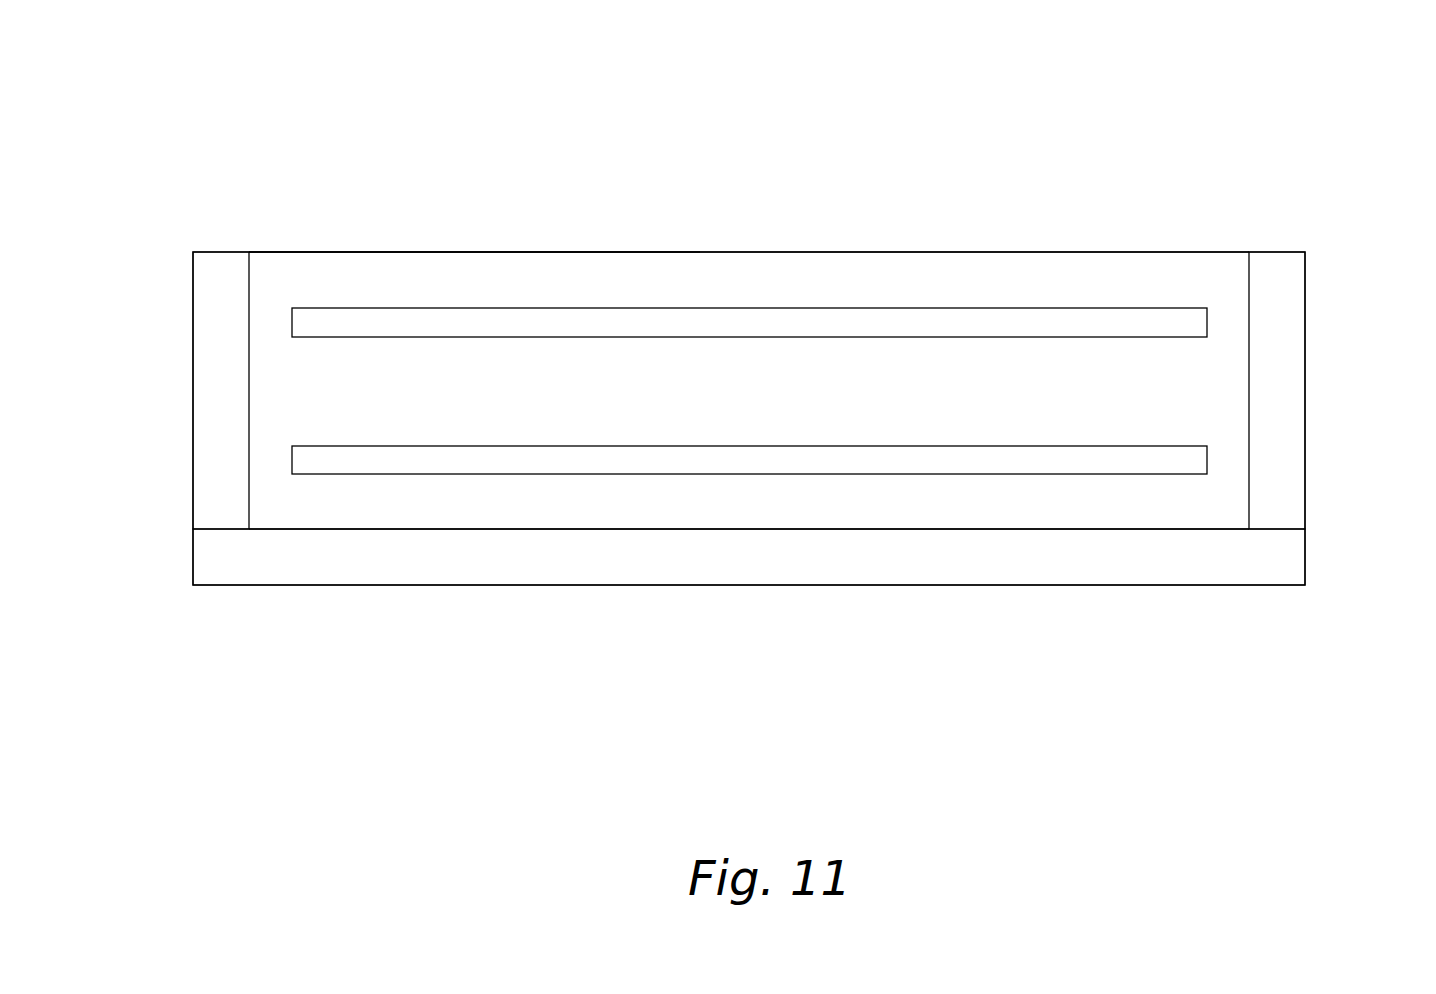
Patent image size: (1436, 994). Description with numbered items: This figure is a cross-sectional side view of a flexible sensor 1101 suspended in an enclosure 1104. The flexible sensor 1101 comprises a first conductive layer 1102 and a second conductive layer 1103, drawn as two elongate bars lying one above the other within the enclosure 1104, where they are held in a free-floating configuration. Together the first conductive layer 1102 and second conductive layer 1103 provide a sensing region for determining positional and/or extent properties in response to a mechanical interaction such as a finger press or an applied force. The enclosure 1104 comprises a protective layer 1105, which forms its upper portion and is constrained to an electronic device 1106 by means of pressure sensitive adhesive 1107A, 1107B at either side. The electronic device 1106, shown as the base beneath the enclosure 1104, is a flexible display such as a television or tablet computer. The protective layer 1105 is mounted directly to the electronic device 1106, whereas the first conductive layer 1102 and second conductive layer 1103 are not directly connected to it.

The flexible sensor 1101 is at (1296, 147).
The first conductive layer 1102 is at (1073, 308).
The second conductive layer 1103 is at (1073, 475).
The enclosure 1104 is at (358, 262).
The protective layer 1105 is at (748, 252).
The electronic device 1106 is at (395, 572).
The pressure sensitive adhesive 1107A is at (1305, 390).
The pressure sensitive adhesive 1107B is at (193, 391).